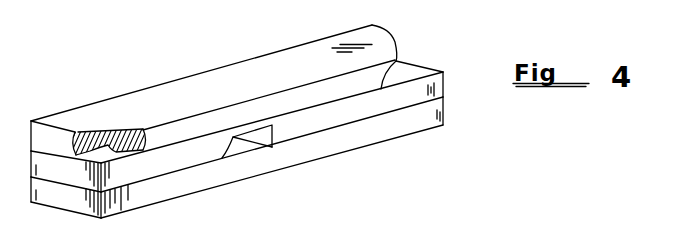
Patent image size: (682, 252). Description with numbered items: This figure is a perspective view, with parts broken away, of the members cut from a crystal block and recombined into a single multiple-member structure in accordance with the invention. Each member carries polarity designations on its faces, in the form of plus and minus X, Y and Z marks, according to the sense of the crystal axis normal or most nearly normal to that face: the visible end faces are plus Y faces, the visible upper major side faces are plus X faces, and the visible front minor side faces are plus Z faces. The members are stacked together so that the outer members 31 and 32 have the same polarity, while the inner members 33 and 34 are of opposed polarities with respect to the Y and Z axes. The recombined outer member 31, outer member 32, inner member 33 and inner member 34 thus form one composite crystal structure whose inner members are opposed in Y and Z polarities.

The outer member 31 is at (142, 97).
The outer member 32 is at (225, 175).
The inner member 33 is at (120, 182).
The inner member 34 is at (436, 91).